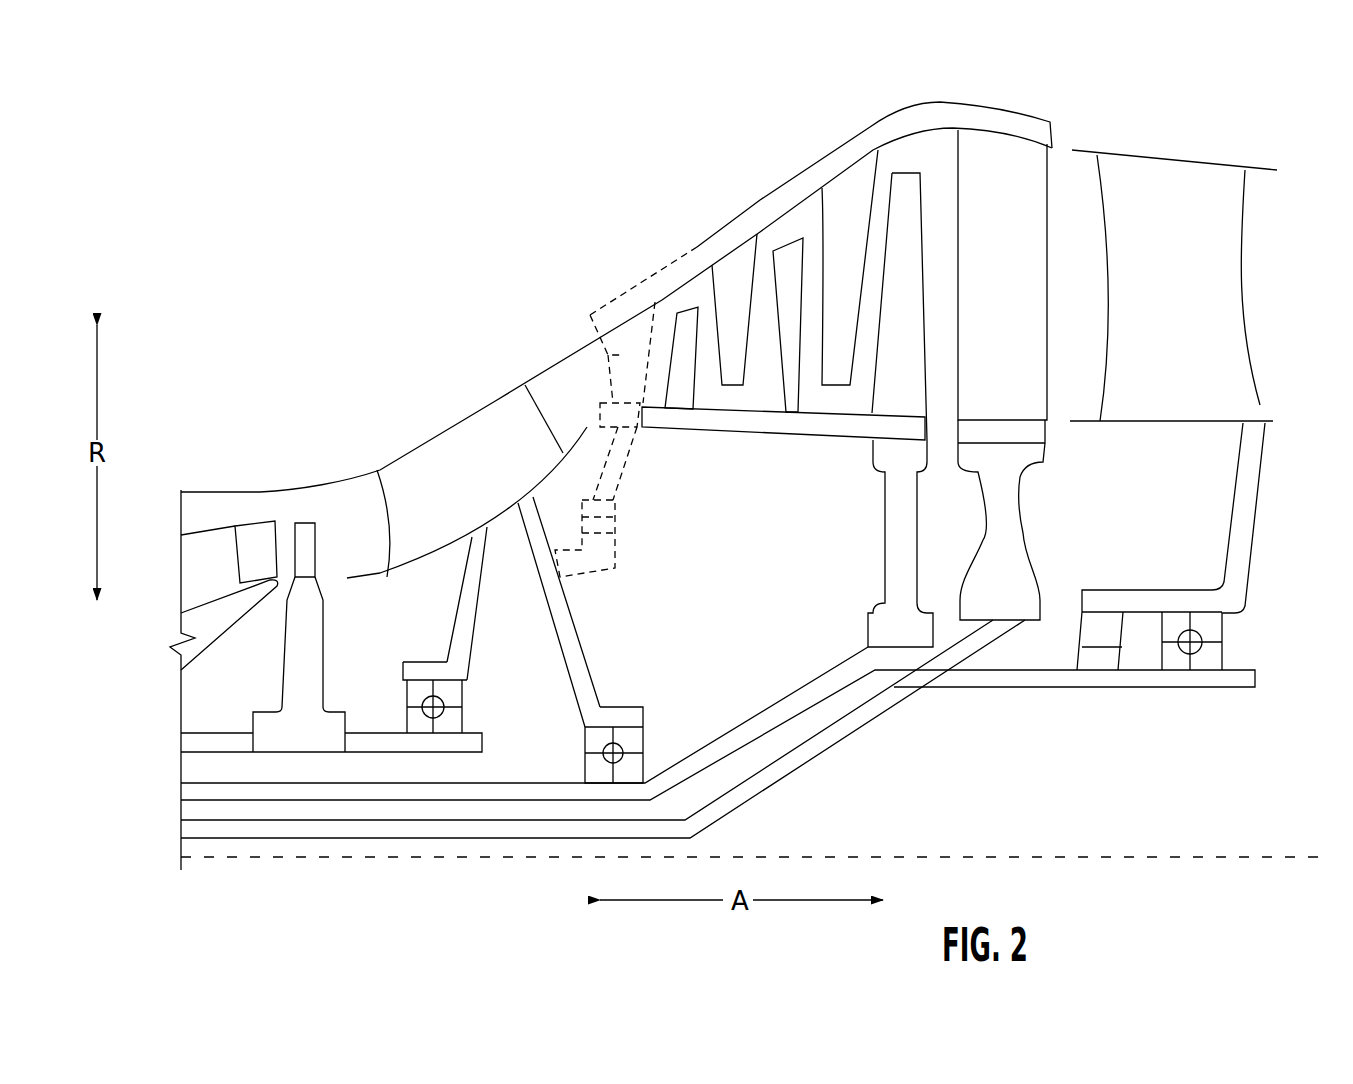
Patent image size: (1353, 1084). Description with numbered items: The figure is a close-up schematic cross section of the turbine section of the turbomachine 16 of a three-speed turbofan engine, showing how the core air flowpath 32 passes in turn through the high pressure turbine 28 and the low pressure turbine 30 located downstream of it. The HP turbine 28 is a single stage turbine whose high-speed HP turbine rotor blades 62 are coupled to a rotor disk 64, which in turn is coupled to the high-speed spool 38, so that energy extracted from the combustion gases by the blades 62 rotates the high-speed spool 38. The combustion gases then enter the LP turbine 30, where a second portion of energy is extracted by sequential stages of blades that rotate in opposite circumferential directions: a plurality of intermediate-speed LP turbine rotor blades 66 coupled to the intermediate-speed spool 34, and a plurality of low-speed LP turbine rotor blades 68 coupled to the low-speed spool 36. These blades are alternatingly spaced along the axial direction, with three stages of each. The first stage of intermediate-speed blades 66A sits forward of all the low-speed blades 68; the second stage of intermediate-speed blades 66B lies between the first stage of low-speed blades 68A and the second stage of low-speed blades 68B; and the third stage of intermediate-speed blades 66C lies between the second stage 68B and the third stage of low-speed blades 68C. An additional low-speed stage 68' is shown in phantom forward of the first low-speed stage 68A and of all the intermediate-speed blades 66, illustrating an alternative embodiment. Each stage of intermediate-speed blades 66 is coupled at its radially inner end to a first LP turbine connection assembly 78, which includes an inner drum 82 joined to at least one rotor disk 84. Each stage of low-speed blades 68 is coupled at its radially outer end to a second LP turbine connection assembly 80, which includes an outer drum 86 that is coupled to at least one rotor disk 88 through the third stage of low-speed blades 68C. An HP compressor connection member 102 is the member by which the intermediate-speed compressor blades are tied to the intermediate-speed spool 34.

The turbomachine 16 is at (382, 262).
The high pressure (HP) turbine 28 is at (305, 457).
The low pressure (LP) turbine 30 is at (795, 122).
The core air flowpath 32 is at (557, 388).
The intermediate-speed spool 34 is at (765, 697).
The low-speed spool 36 is at (820, 742).
The high-speed spool 38 is at (207, 742).
The high-speed HP turbine rotor blades 62 is at (308, 546).
The rotor disk 64 is at (310, 658).
The intermediate-speed LP turbine rotor blades 66 is at (743, 300).
The first stage of intermediate-speed LP turbine rotor blades 66A is at (673, 360).
The second stage of intermediate-speed LP turbine rotor blades 66B is at (782, 322).
The third stage of intermediate-speed LP turbine rotor blades 66C is at (905, 348).
The low-speed LP turbine rotor blades 68 is at (906, 222).
The first stage of low-speed LP turbine rotor blades 68A is at (732, 297).
The second stage of low-speed LP turbine rotor blades 68B is at (850, 250).
The third stage of low-speed LP turbine rotor blades 68C is at (1017, 237).
The stage of LP turbine rotor blades 68' is at (619, 412).
The first LP turbine connection assembly 78 is at (703, 542).
The second LP turbine connection assembly 80 is at (1020, 90).
The inner drum 82 is at (782, 428).
The rotor disk 84 is at (903, 525).
The outer drum 86 is at (912, 118).
The rotor disk 88 is at (1008, 517).
The HP compressor connection member 102 is at (1027, 857).